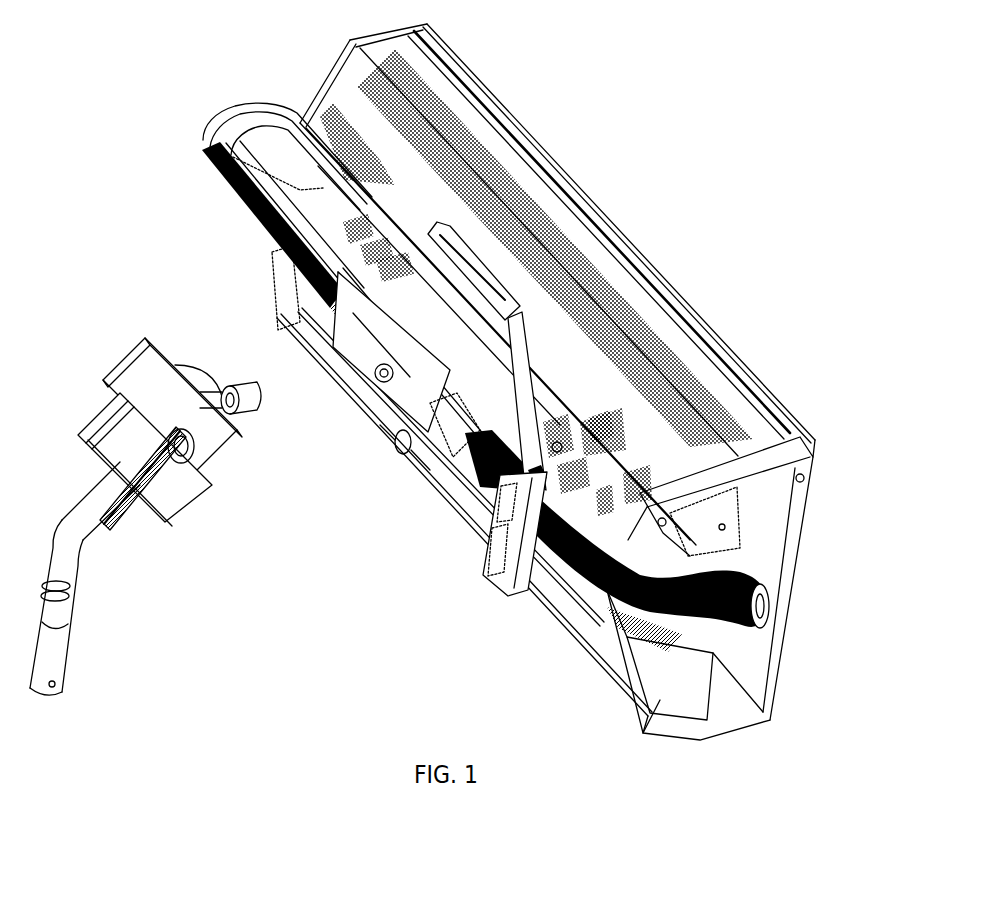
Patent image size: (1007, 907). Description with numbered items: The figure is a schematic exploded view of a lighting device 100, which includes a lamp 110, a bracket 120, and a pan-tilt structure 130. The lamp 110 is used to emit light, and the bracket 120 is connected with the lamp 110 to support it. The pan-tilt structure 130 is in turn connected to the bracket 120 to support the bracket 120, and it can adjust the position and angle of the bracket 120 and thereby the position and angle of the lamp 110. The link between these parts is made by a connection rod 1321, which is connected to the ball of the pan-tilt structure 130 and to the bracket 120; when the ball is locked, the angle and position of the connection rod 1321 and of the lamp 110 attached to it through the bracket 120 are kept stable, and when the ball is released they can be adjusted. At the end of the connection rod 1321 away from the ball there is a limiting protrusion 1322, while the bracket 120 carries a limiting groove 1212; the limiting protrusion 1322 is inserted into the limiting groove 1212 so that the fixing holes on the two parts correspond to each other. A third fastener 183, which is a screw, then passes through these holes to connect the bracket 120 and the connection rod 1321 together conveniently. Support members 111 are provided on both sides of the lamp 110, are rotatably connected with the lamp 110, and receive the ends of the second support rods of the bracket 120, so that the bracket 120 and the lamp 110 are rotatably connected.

The lighting device 100 is at (133, 68).
The lamp 110 is at (597, 218).
The support member 111 is at (762, 578).
The bracket 120 is at (245, 240).
The pan-tilt structure 130 is at (185, 520).
The third fastener 183 is at (371, 382).
The limiting groove 1212 is at (378, 402).
The connection rod 1321 is at (283, 468).
The limiting protrusion 1322 is at (262, 442).